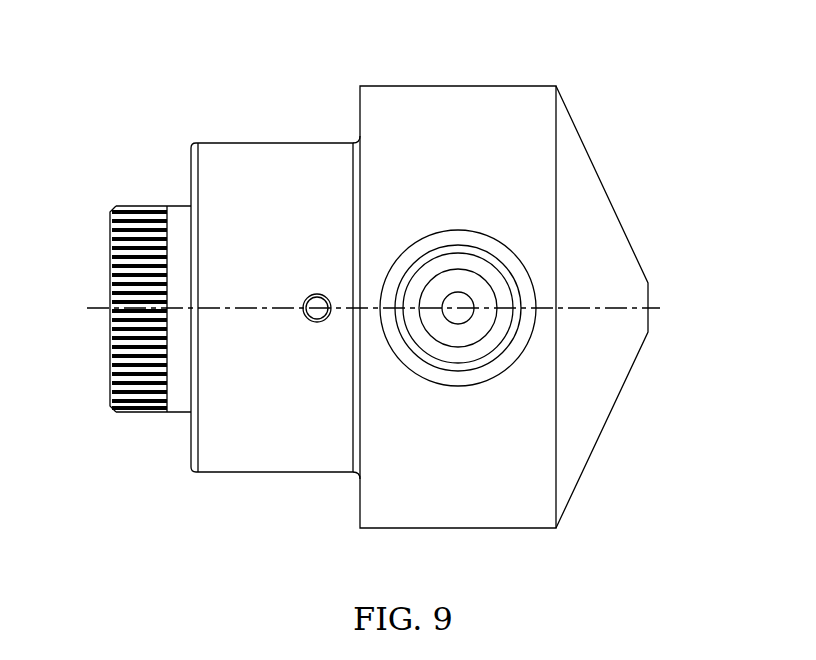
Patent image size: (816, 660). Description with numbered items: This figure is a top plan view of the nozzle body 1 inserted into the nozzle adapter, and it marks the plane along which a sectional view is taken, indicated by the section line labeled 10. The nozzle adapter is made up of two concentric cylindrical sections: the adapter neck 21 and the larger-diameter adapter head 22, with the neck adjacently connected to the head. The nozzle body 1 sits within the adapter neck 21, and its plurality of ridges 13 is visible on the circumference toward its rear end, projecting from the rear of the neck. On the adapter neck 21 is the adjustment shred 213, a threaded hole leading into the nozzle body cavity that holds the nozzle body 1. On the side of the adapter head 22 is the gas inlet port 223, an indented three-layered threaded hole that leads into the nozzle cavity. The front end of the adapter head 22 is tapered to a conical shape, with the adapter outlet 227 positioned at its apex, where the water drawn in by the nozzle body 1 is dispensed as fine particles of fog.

The nozzle body 1 is at (121, 165).
The section line 10 is at (87, 308).
The plurality of ridges 13 is at (108, 368).
The adapter neck 21 is at (246, 346).
The adjustment shred 213 is at (318, 322).
The adapter head 22 is at (534, 272).
The gas inlet port 223 is at (486, 380).
The adapter outlet 227 is at (651, 322).